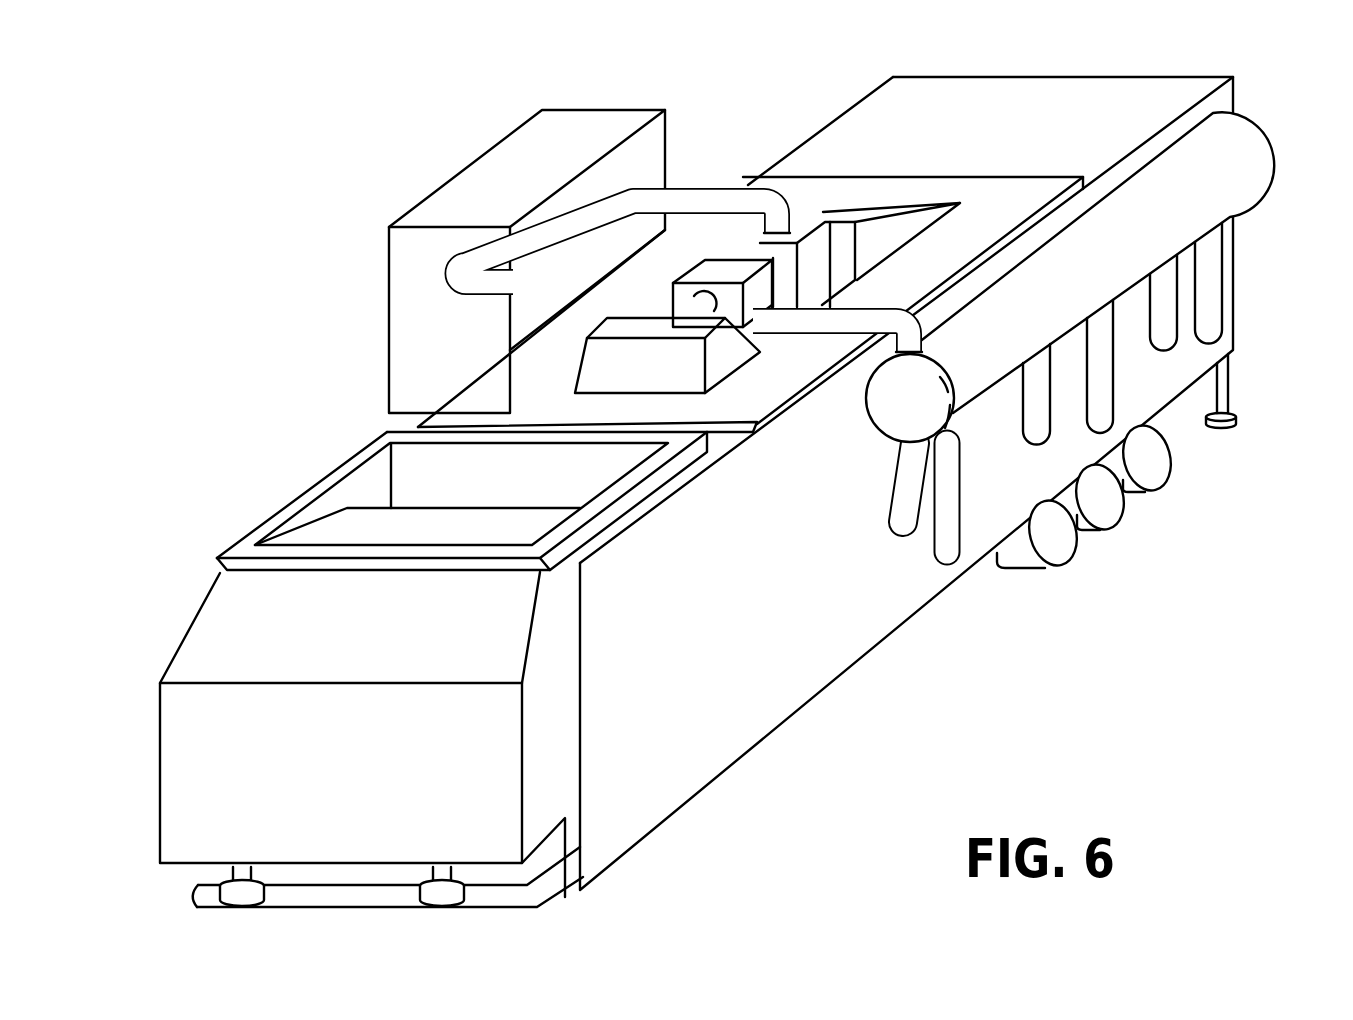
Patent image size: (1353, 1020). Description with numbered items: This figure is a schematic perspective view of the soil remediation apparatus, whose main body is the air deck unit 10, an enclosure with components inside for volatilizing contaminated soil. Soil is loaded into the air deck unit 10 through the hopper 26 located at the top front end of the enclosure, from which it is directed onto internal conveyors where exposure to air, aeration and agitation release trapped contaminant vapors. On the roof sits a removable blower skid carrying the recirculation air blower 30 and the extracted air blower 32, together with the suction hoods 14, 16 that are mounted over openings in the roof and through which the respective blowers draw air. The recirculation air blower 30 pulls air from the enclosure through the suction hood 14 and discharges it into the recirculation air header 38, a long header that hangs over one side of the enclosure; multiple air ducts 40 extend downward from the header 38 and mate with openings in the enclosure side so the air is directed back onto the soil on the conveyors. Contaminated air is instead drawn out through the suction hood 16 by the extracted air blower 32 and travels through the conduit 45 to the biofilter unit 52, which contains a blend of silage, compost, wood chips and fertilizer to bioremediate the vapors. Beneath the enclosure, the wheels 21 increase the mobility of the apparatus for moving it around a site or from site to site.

The air deck unit 10 is at (836, 712).
The suction hood 14 is at (733, 352).
The suction hood 16 is at (888, 206).
The wheels 21 is at (1145, 457).
The hopper 26 is at (353, 517).
The recirculation air blower 30 is at (713, 265).
The extracted air blower 32 is at (826, 218).
The recirculation air header 38 is at (1272, 147).
The air ducts 40 is at (1208, 290).
The conduit 45 is at (617, 208).
The biofilter unit 52 is at (445, 188).